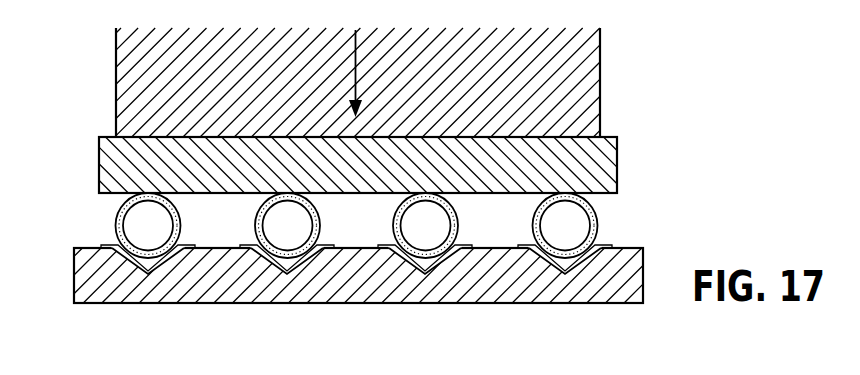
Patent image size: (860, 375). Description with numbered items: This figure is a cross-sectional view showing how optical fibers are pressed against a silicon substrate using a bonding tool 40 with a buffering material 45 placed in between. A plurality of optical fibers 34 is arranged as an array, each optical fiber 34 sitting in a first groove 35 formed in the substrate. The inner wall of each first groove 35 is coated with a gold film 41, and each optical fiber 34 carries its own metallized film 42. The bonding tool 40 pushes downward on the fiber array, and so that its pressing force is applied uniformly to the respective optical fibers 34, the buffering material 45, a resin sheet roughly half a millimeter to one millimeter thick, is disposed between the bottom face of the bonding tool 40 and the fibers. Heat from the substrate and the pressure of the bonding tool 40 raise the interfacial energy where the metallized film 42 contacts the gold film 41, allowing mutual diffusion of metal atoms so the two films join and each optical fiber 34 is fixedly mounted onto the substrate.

The bonding tool 40 is at (573, 72).
The buffering material 45 is at (597, 162).
The metallized film 42 is at (108, 246).
The gold film 41 is at (118, 212).
The first groove 35 is at (143, 264).
The optical fiber 34 is at (148, 240).